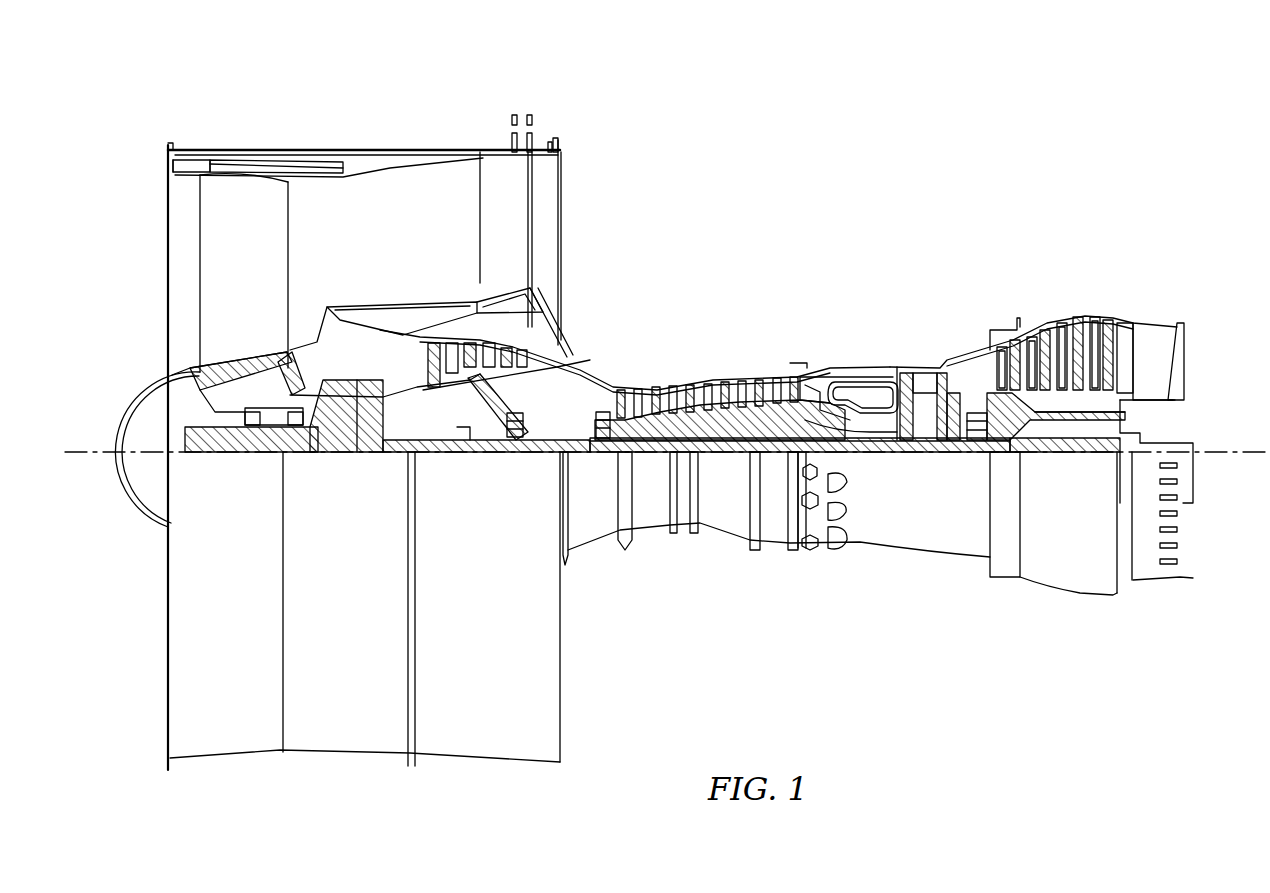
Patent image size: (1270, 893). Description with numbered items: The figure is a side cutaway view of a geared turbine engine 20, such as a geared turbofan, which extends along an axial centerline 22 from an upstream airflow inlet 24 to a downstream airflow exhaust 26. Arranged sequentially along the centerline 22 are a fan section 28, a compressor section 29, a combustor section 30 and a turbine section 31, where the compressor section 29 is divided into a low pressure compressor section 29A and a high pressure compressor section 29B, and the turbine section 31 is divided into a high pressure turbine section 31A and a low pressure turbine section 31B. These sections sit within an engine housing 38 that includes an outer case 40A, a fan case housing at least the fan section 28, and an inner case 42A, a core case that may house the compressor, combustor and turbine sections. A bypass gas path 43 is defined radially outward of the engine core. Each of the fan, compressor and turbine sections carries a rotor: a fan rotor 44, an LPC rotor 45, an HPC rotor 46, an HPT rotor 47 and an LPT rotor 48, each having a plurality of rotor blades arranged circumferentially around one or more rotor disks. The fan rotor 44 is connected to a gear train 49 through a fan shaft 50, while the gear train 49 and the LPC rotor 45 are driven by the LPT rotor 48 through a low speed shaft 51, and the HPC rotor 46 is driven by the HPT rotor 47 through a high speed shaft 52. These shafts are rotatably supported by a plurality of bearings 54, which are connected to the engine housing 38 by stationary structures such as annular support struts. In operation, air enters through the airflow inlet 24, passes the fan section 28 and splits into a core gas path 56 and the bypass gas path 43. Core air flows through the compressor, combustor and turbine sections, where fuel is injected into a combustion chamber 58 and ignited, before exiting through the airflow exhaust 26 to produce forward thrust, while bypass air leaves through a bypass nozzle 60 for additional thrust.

The geared turbine engine 20 is at (168, 98).
The axial centerline 22 is at (1255, 448).
The airflow inlet 24 is at (168, 198).
The airflow exhaust 26 is at (1185, 355).
The fan section 28 is at (168, 126).
The compressor section 29 is at (405, 62).
The low pressure compressor section 29A is at (562, 114).
The high pressure compressor section 29B is at (585, 299).
The combustor section 30 is at (793, 299).
The turbine section 31 is at (898, 237).
The high pressure turbine section 31A is at (970, 299).
The low pressure turbine section 31B is at (1143, 299).
The engine housing 38 is at (578, 584).
The outer case 40A is at (520, 769).
The inner case 42A is at (773, 549).
The bypass gas path 43 is at (365, 249).
The fan rotor 44 is at (174, 375).
The LPC rotor 45 is at (477, 403).
The HPC rotor 46 is at (720, 415).
The HPT rotor 47 is at (923, 434).
The LPT rotor 48 is at (1060, 402).
The gear train 49 is at (364, 454).
The fan shaft 50 is at (213, 454).
The low speed shaft 51 is at (1073, 449).
The high speed shaft 52 is at (857, 432).
The bearings 54 is at (292, 427).
The core gas path 56 is at (590, 370).
The combustion chamber 58 is at (850, 391).
The bypass nozzle 60 is at (560, 212).